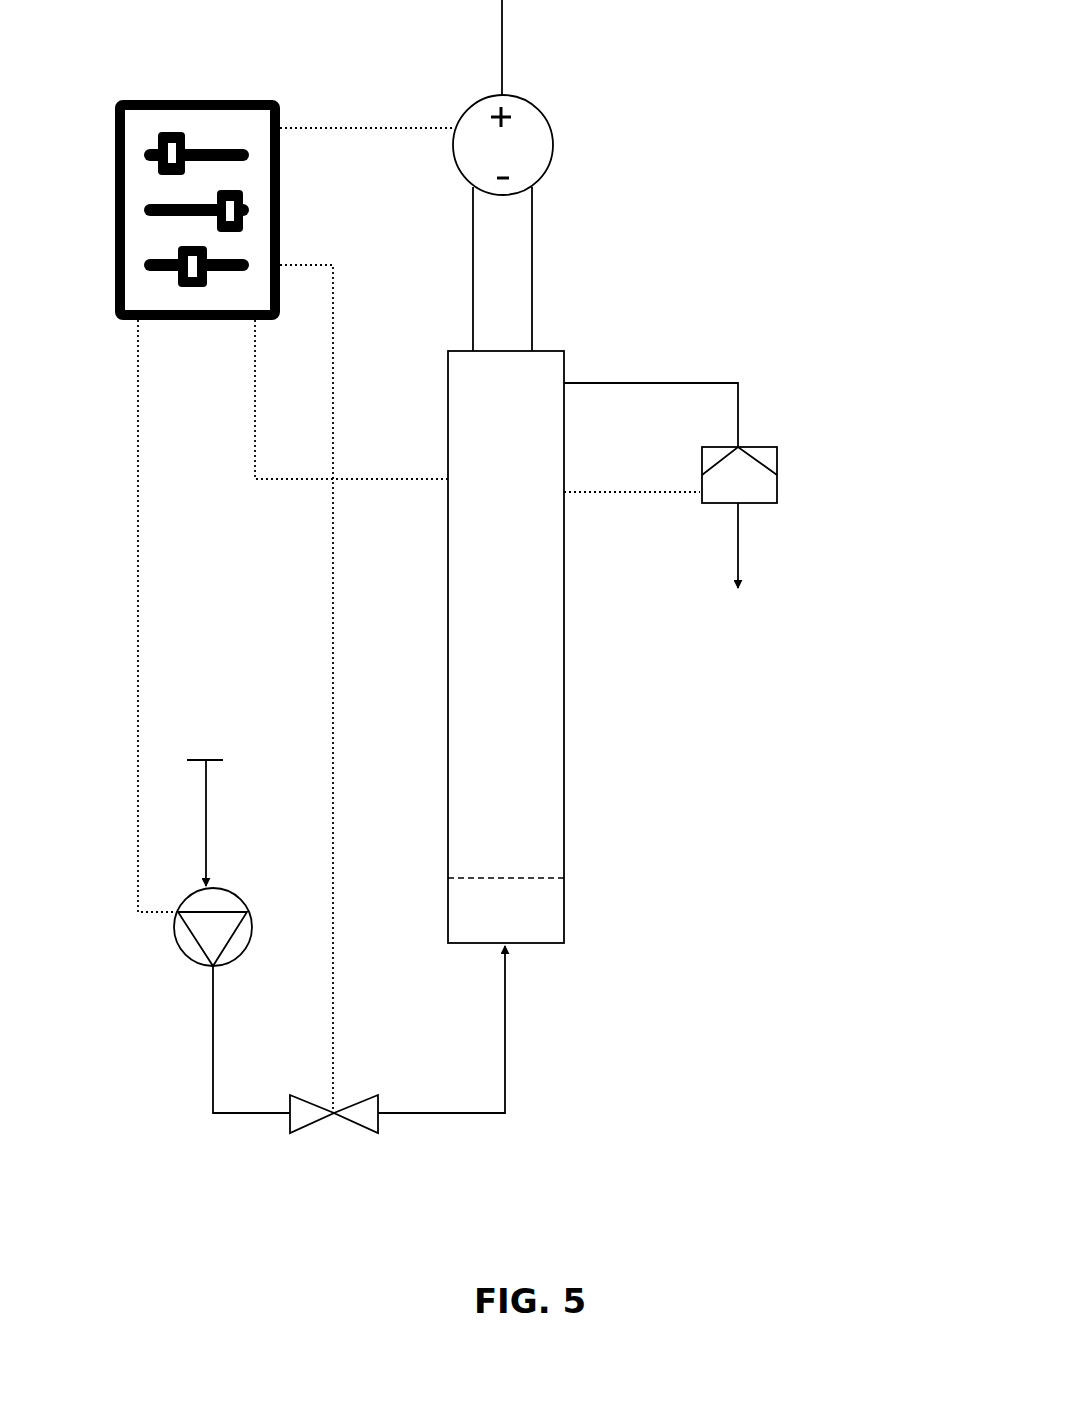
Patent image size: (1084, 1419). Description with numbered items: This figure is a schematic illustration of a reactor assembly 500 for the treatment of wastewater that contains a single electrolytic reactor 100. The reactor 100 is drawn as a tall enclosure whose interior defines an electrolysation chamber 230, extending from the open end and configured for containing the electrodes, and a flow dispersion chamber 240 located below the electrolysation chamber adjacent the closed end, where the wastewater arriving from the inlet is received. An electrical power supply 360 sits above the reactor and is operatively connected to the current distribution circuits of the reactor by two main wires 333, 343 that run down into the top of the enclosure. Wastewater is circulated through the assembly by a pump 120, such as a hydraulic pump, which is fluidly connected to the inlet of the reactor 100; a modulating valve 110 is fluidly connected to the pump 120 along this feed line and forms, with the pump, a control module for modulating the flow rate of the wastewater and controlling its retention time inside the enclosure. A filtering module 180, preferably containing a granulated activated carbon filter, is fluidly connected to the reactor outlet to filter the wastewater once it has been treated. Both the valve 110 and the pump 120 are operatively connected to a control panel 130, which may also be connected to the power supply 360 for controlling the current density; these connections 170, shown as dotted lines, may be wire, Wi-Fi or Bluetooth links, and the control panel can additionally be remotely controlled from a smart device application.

The electrolytic reactor 100 is at (624, 667).
The modulating valve 110 is at (322, 1140).
The pump 120 is at (170, 970).
The control panel 130 is at (218, 95).
The connections 170 is at (348, 122).
The filtering module 180 is at (789, 468).
The electrolysation chamber 230 is at (548, 812).
The flow dispersion chamber 240 is at (548, 922).
The main wire 333 is at (465, 280).
The main wire 343 is at (542, 272).
The electrical power supply 360 is at (558, 120).
The reactor assembly 500 is at (778, 199).